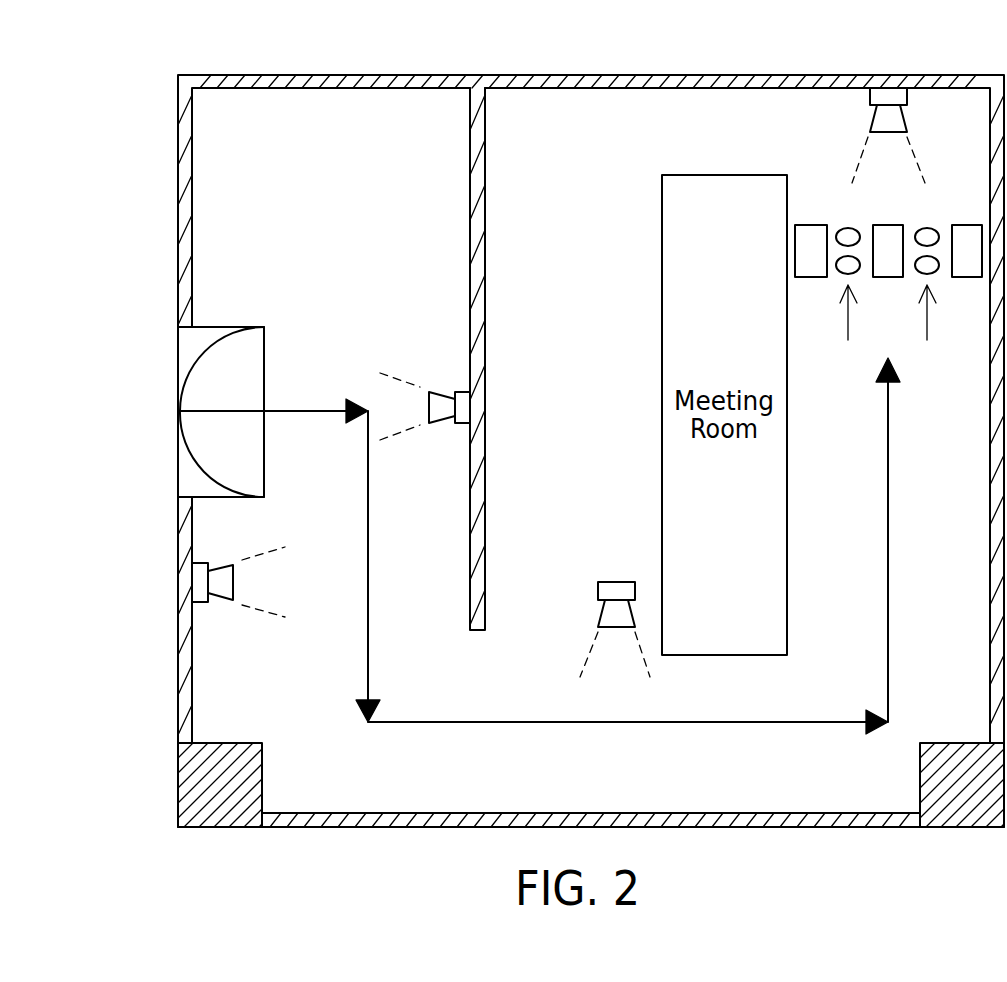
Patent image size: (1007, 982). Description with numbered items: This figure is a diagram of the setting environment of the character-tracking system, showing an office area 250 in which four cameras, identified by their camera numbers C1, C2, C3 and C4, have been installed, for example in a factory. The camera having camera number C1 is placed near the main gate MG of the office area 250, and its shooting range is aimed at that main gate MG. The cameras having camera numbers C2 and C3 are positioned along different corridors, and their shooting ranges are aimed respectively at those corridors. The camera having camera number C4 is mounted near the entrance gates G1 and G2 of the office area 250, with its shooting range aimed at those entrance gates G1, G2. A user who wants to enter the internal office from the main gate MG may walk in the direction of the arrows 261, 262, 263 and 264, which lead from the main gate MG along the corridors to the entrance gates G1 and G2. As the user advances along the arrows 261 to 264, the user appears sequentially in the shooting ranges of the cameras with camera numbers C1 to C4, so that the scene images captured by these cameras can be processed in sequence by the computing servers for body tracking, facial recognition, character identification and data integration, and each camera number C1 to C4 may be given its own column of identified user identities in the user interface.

The office area 250 is at (128, 62).
The main gate MG is at (233, 327).
The arrow 261 is at (295, 410).
The arrow 262 is at (368, 575).
The arrow 263 is at (505, 722).
The arrow 264 is at (888, 540).
The camera number C1 is at (425, 394).
The camera number C2 is at (238, 569).
The camera number C3 is at (615, 610).
The camera number C4 is at (873, 135).
The entrance gate G1 is at (850, 264).
The entrance gate G2 is at (926, 264).